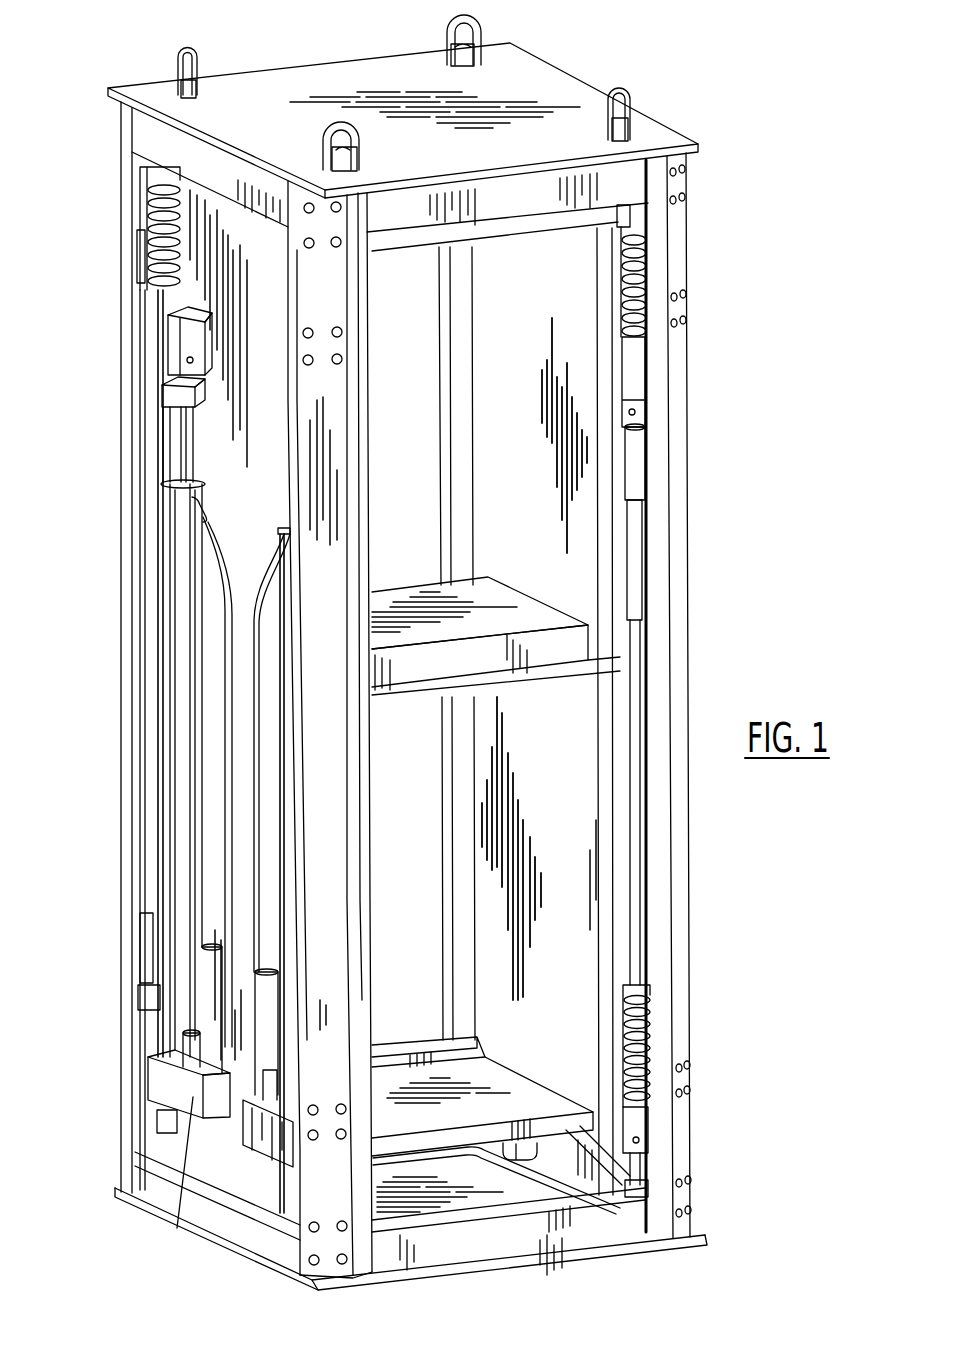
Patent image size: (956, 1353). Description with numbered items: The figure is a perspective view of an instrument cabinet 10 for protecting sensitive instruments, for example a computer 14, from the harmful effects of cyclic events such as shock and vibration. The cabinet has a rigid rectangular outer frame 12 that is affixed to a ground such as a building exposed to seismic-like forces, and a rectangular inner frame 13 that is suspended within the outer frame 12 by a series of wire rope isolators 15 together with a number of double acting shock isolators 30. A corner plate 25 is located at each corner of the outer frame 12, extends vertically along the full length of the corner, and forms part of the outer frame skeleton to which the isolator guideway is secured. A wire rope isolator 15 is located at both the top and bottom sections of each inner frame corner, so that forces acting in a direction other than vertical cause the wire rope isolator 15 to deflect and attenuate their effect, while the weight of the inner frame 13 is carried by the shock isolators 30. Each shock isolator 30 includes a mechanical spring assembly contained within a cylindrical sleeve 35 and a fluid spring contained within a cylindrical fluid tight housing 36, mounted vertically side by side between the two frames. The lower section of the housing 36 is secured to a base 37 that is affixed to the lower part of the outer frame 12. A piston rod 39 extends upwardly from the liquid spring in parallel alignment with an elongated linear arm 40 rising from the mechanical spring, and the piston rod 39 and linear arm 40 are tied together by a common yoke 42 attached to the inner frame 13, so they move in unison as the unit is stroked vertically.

The cabinet 10 is at (703, 343).
The outer frame 12 is at (613, 1233).
The inner frame 13 is at (580, 1124).
The computer 14 is at (488, 597).
The wire rope isolator 15 is at (133, 231).
The corner plate 25 is at (682, 923).
The double acting shock isolator 30 is at (153, 649).
The cylindrical sleeve 35 is at (163, 490).
The cylindrical fluid tight housing 36 is at (183, 518).
The base 37 is at (254, 1132).
The piston rod 39 is at (190, 442).
The elongated linear arm 40 is at (173, 412).
The yoke 42 is at (172, 390).